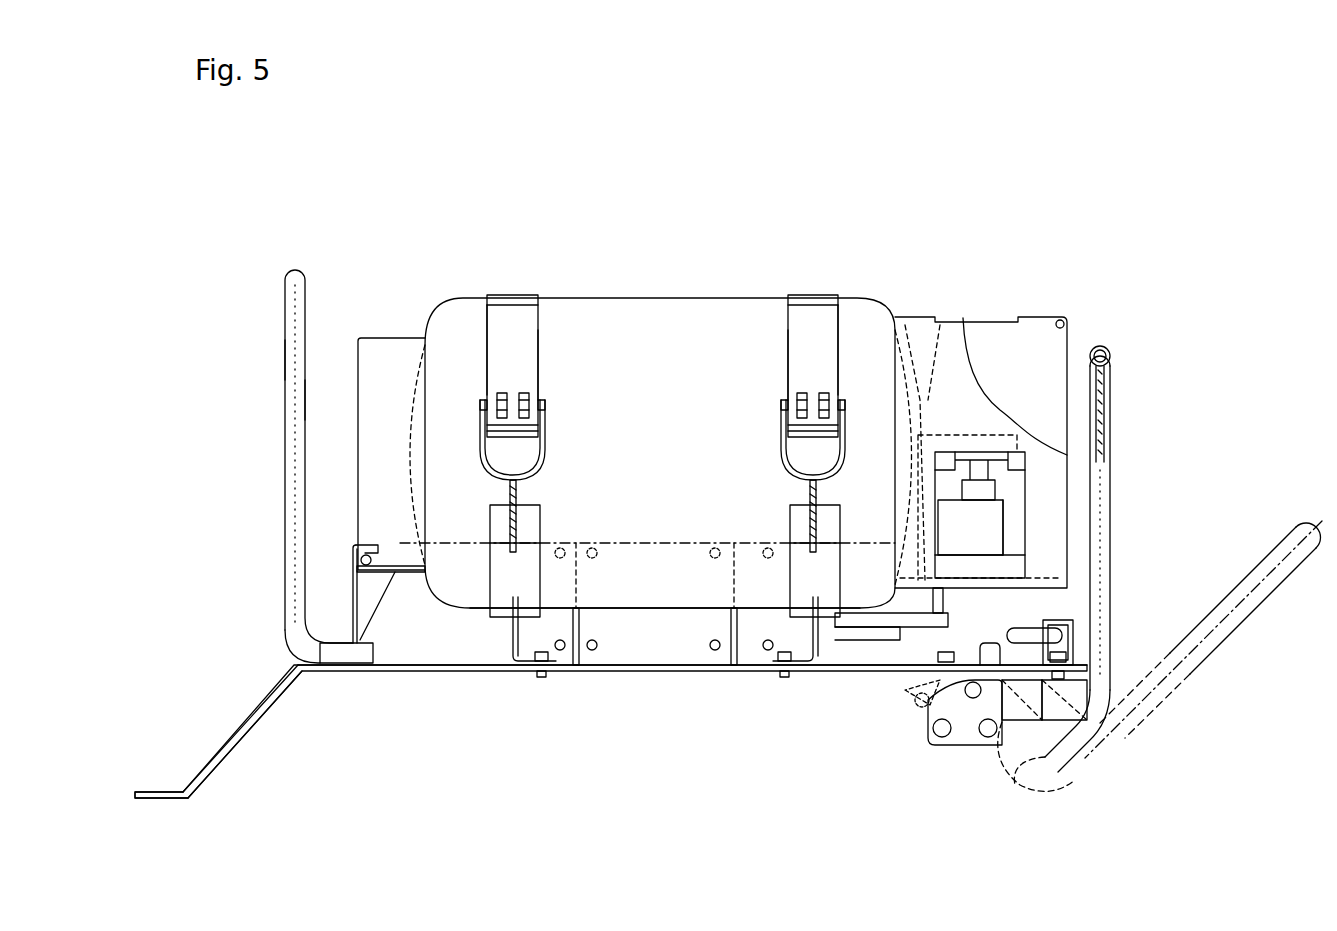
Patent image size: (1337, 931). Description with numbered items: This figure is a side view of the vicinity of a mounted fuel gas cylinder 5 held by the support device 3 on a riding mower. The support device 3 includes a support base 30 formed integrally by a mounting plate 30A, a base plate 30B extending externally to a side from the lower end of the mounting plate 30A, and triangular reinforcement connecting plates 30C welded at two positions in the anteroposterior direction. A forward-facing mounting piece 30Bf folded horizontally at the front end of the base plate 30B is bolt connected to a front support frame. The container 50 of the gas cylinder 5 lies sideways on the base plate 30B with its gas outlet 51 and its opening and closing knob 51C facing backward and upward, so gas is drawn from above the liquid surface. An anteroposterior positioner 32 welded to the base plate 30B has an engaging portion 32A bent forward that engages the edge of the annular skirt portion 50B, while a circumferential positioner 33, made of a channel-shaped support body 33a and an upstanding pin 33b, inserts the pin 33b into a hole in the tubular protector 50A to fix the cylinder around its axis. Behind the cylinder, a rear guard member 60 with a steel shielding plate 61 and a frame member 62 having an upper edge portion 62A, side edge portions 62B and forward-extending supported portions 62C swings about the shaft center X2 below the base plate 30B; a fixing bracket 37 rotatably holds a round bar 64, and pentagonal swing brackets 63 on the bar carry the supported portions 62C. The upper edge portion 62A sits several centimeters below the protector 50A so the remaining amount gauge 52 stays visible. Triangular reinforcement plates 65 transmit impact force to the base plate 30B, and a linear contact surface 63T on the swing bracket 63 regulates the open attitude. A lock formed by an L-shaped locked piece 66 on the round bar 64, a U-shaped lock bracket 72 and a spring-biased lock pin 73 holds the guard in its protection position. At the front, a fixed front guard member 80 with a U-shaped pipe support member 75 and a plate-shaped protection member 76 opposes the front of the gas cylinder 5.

The support device 3 is at (530, 735).
The gas cylinder 5 is at (683, 298).
The support base 30 is at (628, 672).
The mounting plate 30A is at (655, 540).
The base plate 30B is at (495, 671).
The mounting piece 30Bf is at (158, 792).
The reinforcement connecting plate 30C is at (597, 646).
The anteroposterior positioner 32 is at (355, 576).
The engaging portion 32A is at (362, 545).
The circumferential positioner 33 is at (870, 645).
The support body 33a is at (882, 592).
The pin 33b is at (940, 572).
The fixing bracket 37 is at (1120, 730).
The container 50 is at (607, 298).
The tubular protector 50A is at (1040, 317).
The skirt portion 50B is at (380, 338).
The gas outlet 51 is at (1016, 462).
The opening and closing knob 51C is at (993, 556).
The remaining amount gauge 52 is at (986, 449).
The rear guard member 60 is at (1114, 420).
The shielding plate 61 is at (1104, 400).
The frame member 62 is at (1111, 455).
The upper edge portion 62A is at (1108, 350).
The side edge portion 62B is at (1123, 489).
The supported portion 62C is at (1040, 790).
The swing bracket 63 is at (940, 748).
The linear contact surface 63T is at (920, 702).
The round bar 64 is at (933, 727).
The reinforcement plate 65 is at (1092, 670).
The locked piece 66 is at (1082, 634).
The lock bracket 72 is at (1073, 628).
The lock pin 73 is at (1012, 628).
The support member 75 is at (287, 307).
The protection member 76 is at (286, 394).
The front guard member 80 is at (286, 362).
The shaft center X2 is at (975, 660).